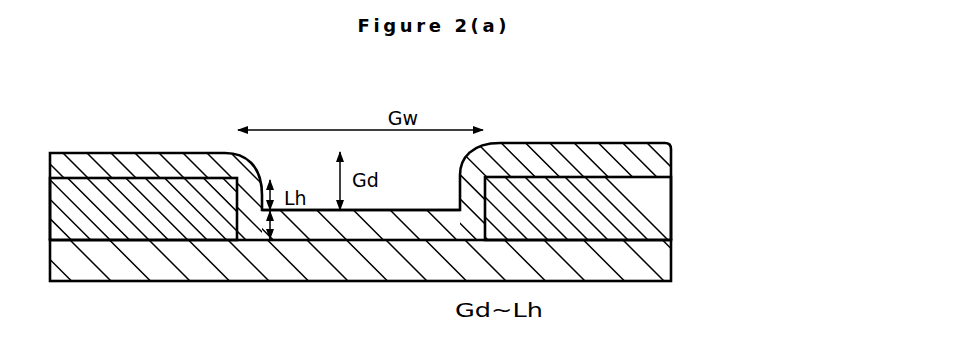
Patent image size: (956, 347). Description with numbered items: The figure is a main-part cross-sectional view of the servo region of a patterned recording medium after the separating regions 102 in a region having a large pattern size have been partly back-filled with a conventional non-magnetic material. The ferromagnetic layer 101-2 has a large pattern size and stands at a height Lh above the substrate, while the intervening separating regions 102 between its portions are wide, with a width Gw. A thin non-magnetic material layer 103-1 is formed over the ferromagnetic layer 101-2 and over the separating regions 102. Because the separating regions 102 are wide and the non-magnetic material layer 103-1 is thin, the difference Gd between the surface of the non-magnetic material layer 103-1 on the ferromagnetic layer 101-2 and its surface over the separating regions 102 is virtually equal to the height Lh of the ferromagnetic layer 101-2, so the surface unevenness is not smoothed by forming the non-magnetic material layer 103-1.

The ferromagnetic layer 101-2 is at (95, 220).
The separating regions 102 is at (407, 197).
The non-magnetic material layer 103-1 is at (598, 158).